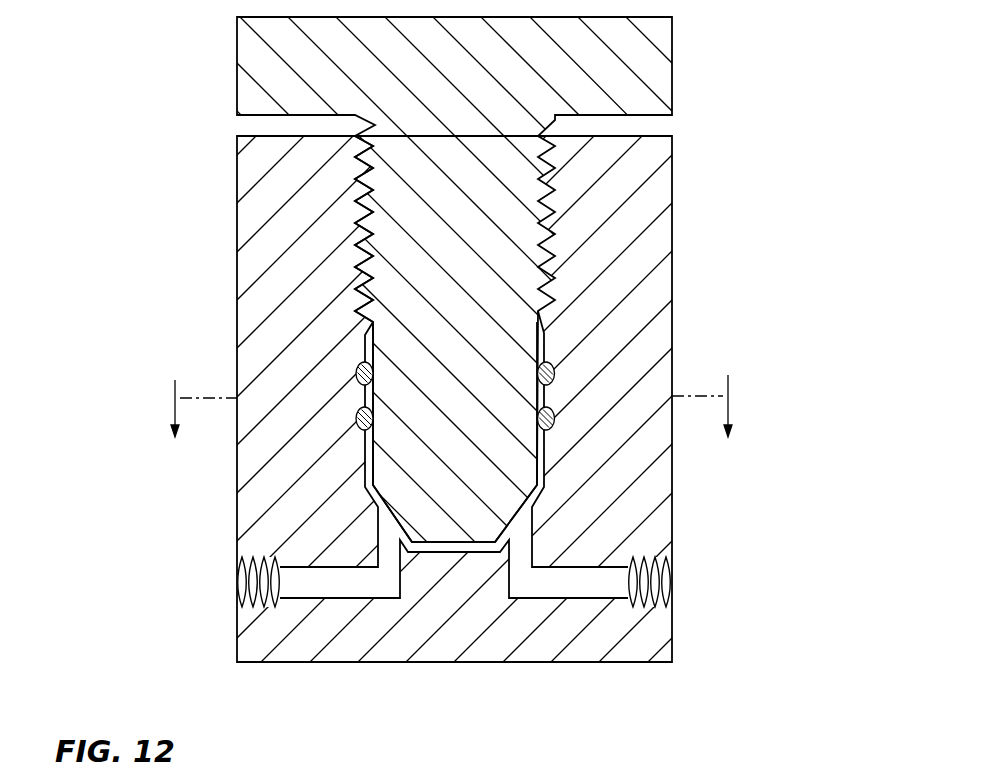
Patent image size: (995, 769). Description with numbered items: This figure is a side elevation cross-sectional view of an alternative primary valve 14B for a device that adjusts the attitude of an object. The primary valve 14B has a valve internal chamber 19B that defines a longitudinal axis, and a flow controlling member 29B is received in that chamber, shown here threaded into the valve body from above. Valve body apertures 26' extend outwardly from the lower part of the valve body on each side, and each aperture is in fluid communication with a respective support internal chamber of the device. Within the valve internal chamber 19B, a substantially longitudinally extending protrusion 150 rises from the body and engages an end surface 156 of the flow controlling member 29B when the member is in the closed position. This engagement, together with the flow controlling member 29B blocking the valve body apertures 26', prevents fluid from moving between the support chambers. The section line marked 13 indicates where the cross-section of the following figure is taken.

The flow controlling member 29B is at (250, 53).
The primary valve 14B is at (237, 203).
The valve internal chamber 19B is at (373, 476).
The valve body apertures 26' is at (454, 646).
The longitudinally extending protrusion 150 is at (453, 577).
The end surface 156 is at (470, 544).
The section line 13- 13 is at (456, 406).